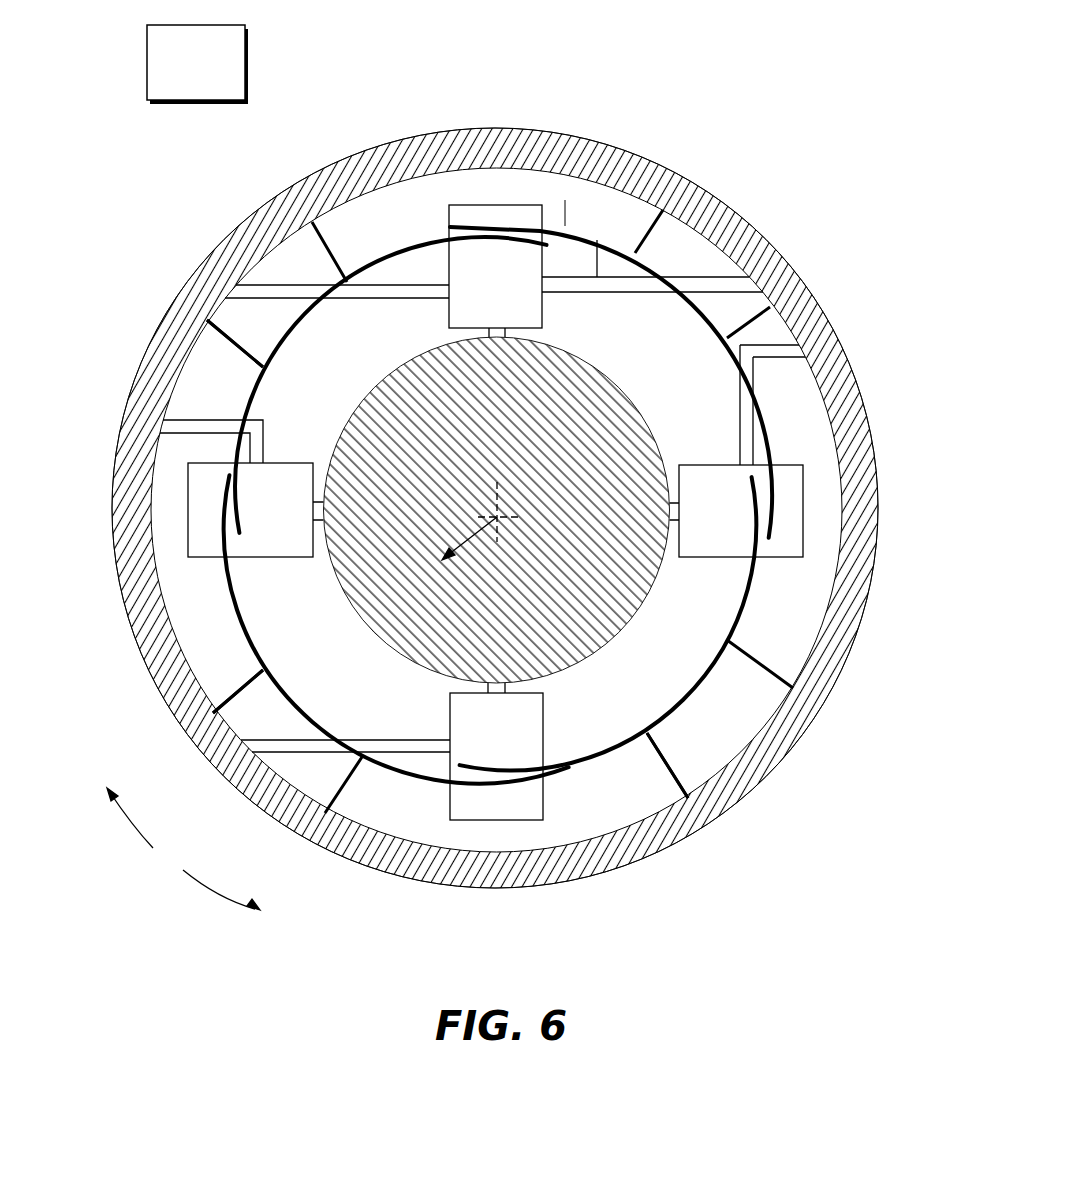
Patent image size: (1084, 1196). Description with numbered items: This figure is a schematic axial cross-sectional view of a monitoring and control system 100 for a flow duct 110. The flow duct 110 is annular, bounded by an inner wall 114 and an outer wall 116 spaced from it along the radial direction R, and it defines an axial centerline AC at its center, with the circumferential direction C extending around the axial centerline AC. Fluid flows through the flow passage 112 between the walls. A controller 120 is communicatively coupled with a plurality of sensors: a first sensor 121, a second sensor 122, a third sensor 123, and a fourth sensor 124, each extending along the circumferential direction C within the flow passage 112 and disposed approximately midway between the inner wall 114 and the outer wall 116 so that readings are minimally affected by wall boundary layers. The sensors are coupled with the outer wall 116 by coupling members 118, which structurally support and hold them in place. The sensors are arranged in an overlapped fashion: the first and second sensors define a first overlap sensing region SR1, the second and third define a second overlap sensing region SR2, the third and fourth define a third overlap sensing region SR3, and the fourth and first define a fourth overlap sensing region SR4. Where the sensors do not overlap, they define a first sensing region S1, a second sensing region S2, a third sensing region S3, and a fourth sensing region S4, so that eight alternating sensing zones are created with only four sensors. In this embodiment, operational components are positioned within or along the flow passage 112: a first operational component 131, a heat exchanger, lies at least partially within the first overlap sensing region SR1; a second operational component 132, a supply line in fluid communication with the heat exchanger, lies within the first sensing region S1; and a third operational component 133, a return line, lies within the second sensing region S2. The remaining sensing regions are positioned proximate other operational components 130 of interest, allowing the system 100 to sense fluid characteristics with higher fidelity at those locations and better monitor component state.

The monitoring and control system 100 is at (762, 92).
The flow duct 110 is at (808, 266).
The flow passage 112 is at (498, 505).
The inner wall 114 is at (497, 510).
The outer wall 116 is at (182, 736).
The coupling members 118 is at (316, 221).
The controller 120 is at (197, 64).
The first sensor 121 is at (268, 284).
The second sensor 122 is at (565, 226).
The third sensor 123 is at (688, 695).
The fourth sensor 124 is at (265, 675).
The operational components 130 is at (183, 483).
The first operational component 131 is at (455, 203).
The second operational component 132 is at (261, 259).
The third operational component 133 is at (597, 277).
The first sensing region S1 is at (240, 397).
The second sensing region S2 is at (665, 260).
The third sensing region S3 is at (760, 609).
The fourth sensing region S4 is at (274, 643).
The first overlap sensing region SR1 is at (514, 216).
The second overlap sensing region SR2 is at (790, 500).
The third overlap sensing region SR3 is at (527, 802).
The fourth overlap sensing region SR4 is at (213, 530).
The axial centerline AC is at (507, 511).
The radial direction R is at (469, 544).
The circumferential direction C is at (183, 849).